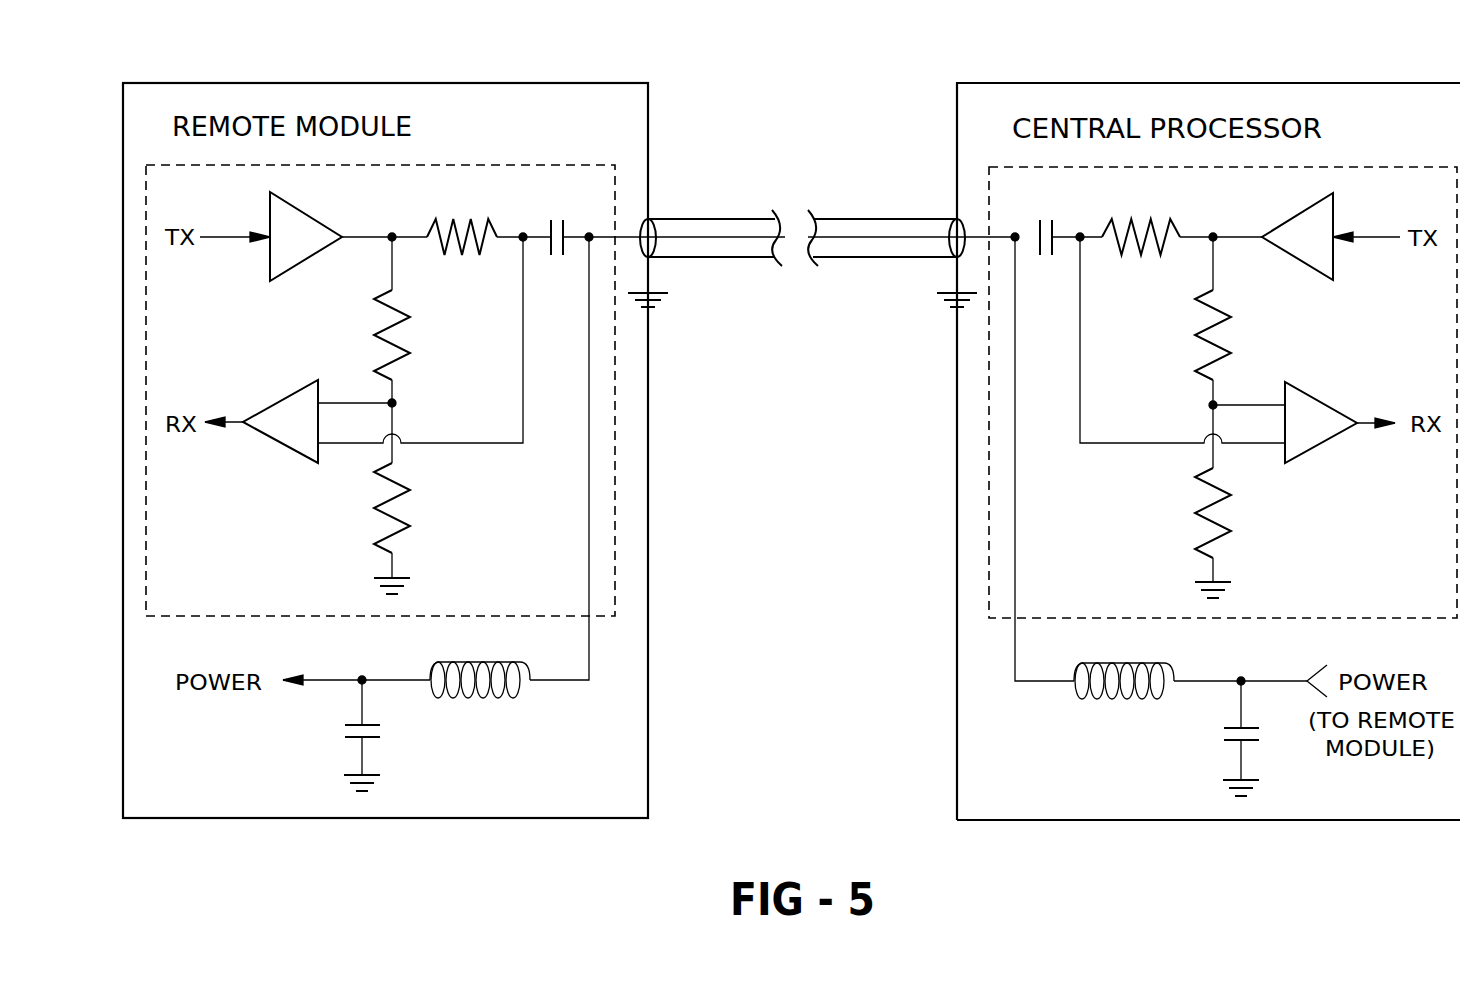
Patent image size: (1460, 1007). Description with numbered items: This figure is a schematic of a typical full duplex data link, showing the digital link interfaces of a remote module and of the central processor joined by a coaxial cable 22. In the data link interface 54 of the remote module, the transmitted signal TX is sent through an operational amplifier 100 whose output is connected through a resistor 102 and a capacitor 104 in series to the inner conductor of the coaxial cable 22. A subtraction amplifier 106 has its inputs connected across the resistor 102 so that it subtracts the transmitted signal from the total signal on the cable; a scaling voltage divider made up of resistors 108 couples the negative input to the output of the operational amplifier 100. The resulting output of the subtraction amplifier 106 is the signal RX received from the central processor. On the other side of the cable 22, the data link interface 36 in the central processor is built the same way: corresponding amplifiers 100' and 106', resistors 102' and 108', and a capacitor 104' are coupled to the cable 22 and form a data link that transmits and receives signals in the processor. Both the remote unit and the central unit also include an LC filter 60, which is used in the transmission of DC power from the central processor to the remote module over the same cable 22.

The coaxial cable 22 is at (888, 219).
The data link interface 36 is at (983, 530).
The data link interface 54 is at (615, 540).
The LC filter 60 is at (436, 514).
The operational amplifier 100 is at (294, 231).
The resistor 102 is at (462, 141).
The capacitor 104 is at (579, 141).
The subtraction amplifier 106 is at (347, 350).
The resistors 108 is at (327, 415).
The amplifier 100' is at (1346, 232).
The resistor 102' is at (1176, 215).
The capacitor 104' is at (1047, 293).
The amplifier 106' is at (1255, 350).
The resistors 108' is at (1233, 417).